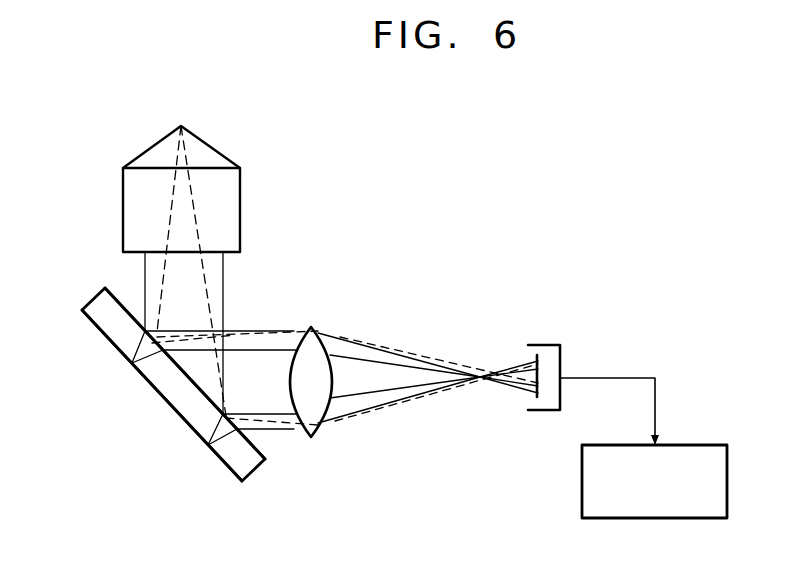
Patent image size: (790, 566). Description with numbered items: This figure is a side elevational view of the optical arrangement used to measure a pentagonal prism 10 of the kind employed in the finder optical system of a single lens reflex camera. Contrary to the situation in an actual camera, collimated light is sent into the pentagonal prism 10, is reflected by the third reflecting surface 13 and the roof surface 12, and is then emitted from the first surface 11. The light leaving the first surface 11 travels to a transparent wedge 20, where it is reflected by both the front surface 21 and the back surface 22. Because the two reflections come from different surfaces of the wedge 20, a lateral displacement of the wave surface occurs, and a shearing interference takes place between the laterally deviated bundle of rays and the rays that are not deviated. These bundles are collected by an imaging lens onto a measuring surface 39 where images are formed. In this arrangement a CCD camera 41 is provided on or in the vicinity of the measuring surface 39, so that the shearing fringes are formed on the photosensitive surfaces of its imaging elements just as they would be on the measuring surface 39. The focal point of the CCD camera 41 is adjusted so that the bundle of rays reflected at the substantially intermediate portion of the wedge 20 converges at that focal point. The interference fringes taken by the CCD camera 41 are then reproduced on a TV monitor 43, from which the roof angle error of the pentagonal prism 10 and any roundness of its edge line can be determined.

The pentagonal prism 10 is at (139, 120).
The first surface 11 is at (232, 255).
The roof surface 12 is at (142, 155).
The third reflecting surface 13 is at (232, 213).
The transparent wedge 20 is at (158, 392).
The front surface 21 is at (126, 300).
The back surface 22 is at (106, 335).
The measuring surface 39 is at (305, 328).
The CCD camera 41 is at (550, 345).
The TV monitor 43 is at (692, 445).